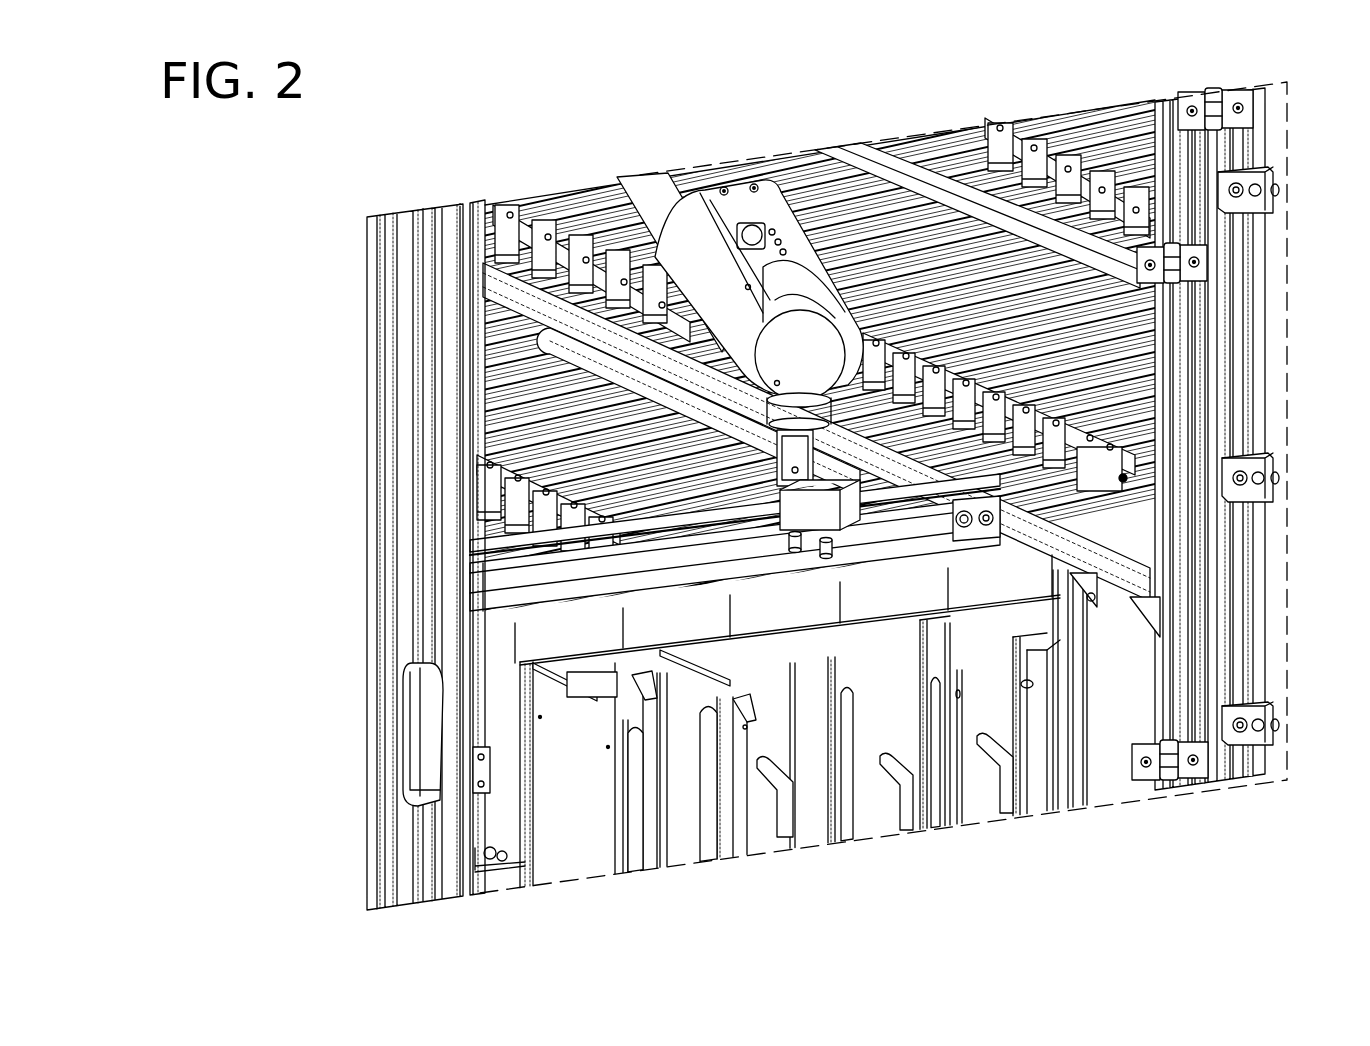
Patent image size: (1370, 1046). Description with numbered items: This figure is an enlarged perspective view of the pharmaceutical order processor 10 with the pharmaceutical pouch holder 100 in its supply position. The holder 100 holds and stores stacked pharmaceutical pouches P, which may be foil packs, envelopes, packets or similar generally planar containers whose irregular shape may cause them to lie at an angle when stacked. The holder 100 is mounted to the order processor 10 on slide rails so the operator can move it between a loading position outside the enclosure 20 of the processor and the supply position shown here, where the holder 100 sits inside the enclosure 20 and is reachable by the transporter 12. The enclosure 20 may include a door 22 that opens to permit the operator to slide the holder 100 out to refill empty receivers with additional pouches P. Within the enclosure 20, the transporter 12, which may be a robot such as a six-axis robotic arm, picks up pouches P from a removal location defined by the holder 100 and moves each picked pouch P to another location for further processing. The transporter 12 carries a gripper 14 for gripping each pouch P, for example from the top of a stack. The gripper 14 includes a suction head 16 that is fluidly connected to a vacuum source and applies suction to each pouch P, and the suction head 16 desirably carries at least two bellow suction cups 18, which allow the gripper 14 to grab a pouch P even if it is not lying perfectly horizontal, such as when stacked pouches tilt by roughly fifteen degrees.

The pharmaceutical order processor 10 is at (1262, 68).
The transporter 12 is at (642, 185).
The gripper 14 is at (844, 468).
The suction head 16 is at (740, 547).
The bellow suction cups 18 is at (797, 552).
The enclosure 20 is at (395, 889).
The door 22 is at (448, 889).
The pharmaceutical pouch holder 100 is at (1014, 856).
The pharmaceutical pouches P is at (983, 630).